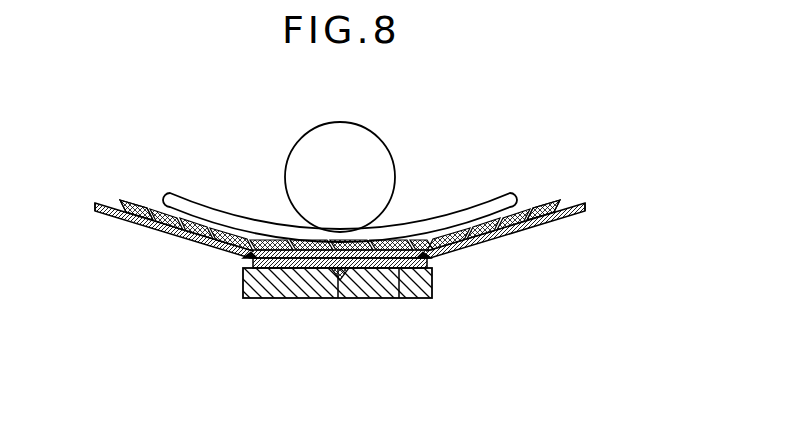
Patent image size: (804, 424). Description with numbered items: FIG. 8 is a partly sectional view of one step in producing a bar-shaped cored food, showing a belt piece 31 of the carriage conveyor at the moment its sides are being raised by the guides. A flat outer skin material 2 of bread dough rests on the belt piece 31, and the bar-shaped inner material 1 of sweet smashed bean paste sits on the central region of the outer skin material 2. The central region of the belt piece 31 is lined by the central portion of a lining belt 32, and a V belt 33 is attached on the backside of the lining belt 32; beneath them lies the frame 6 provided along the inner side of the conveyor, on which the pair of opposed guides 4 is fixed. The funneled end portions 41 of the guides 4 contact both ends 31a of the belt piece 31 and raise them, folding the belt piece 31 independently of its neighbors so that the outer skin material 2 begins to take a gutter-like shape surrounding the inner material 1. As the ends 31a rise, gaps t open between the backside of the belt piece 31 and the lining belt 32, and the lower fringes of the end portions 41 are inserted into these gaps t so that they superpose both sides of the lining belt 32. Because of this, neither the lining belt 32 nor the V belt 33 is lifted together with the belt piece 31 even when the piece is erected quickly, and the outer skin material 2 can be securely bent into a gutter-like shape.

The inner material 1 is at (358, 142).
The outer skin material 2 is at (427, 219).
The guide 4 is at (107, 220).
The belt piece 31 is at (148, 214).
The end of belt piece 31a is at (127, 200).
The end portion of guide 41 is at (95, 207).
The gap t is at (247, 258).
The lining belt 32 is at (406, 299).
The frame 6 is at (258, 299).
The V belt 33 is at (338, 299).